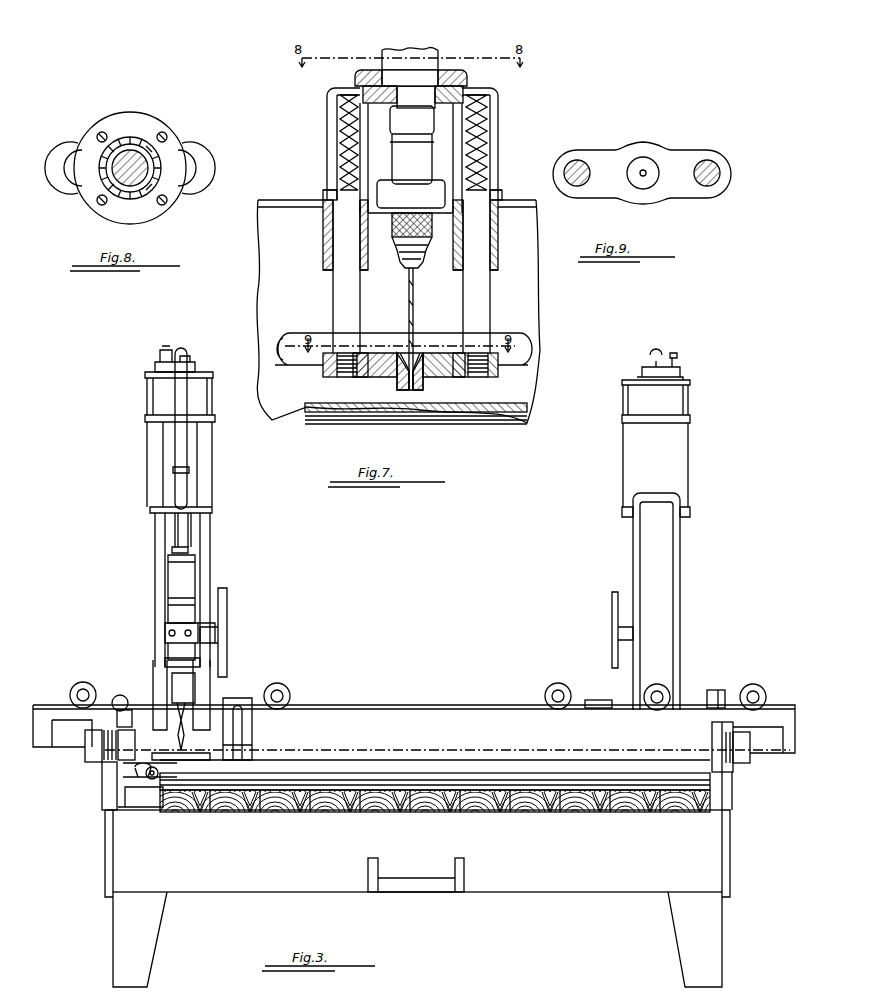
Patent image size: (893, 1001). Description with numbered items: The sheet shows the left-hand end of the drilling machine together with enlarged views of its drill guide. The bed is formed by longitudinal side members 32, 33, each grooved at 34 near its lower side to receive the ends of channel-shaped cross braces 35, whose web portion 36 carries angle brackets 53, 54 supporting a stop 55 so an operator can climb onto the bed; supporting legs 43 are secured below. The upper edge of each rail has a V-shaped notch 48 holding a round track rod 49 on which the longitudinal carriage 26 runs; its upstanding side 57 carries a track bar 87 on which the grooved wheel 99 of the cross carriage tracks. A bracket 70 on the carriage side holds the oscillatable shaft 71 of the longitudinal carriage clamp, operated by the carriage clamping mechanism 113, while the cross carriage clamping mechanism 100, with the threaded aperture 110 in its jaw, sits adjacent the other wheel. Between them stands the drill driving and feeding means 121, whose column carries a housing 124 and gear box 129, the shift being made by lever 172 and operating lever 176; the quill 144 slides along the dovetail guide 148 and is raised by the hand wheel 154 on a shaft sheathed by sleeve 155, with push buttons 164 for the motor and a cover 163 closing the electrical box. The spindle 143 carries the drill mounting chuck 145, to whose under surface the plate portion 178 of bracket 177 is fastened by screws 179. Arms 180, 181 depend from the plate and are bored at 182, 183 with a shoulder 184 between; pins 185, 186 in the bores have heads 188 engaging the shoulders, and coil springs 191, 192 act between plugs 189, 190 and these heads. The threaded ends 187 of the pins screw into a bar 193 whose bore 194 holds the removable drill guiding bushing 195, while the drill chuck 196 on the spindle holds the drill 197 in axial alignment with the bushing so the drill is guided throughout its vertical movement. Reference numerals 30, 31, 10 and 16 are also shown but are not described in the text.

In FIG. 7, the spindle 143 is at (412, 88).
In FIG. 8, the spindle 143 is at (152, 160).
In FIG. 3, the spindle 143 is at (178, 538).
In FIG. 7, the plate portion 178 is at (378, 80).
In FIG. 8, the plate portion 178 is at (166, 196).
In FIG. 7, the plug 190 is at (362, 80).
In FIG. 8, the plug 190 is at (70, 148).
In FIG. 7, the plug 189 is at (462, 90).
In FIG. 8, the plug 189 is at (204, 166).
In FIG. 7, the coil spring 192 is at (340, 128).
In FIG. 7, the coil spring 191 is at (494, 124).
In FIG. 7, the arm 181 is at (332, 165).
In FIG. 8, the arm 181 is at (45, 186).
In FIG. 3, the arm 181 is at (150, 670).
In FIG. 7, the arm 180 is at (495, 156).
In FIG. 8, the arm 180 is at (204, 175).
In FIG. 3, the arm 180 is at (222, 708).
In FIG. 7, the head 188 is at (325, 195).
In FIG. 7, the bore 183 is at (340, 190).
In FIG. 7, the shoulder 184 is at (330, 211).
In FIG. 7, the bore 182 is at (330, 247).
In FIG. 7, the pin 186 is at (345, 300).
In FIG. 7, the pin 185 is at (485, 286).
In FIG. 7, the bracket 177 is at (452, 112).
In FIG. 7, the drill chuck 196 is at (422, 256).
In FIG. 7, the drill 197 is at (409, 312).
In FIG. 9, the drill 197 is at (650, 170).
In FIG. 7, the threaded end 187 is at (350, 377).
In FIG. 9, the threaded end 187 is at (577, 183).
In FIG. 7, the bar 193 is at (380, 372).
In FIG. 9, the bar 193 is at (688, 158).
In FIG. 7, the bore 194 is at (422, 381).
In FIG. 7, the drill guiding bushing 195 is at (400, 380).
In FIG. 8, the screws 179 is at (153, 122).
In FIG. 9, the drill mounting chuck 145 is at (648, 176).
In FIG. 3, the lever 172 is at (172, 350).
In FIG. 3, the operating lever 176 is at (186, 388).
In FIG. 3, the gear box 129 is at (205, 401).
In FIG. 3, the housing 124 is at (150, 480).
In FIG. 3, the left column 30 is at (210, 482).
In FIG. 3, the right column 31 is at (688, 476).
In FIG. 3, the dovetail guide 148 is at (190, 531).
In FIG. 3, the drill driving and feeding means 121 is at (223, 566).
In FIG. 3, the quill 144 is at (176, 584).
In FIG. 3, the sleeve 155 is at (210, 612).
In FIG. 3, the push buttons 164 is at (172, 630).
In FIG. 3, the hand wheel 154 is at (228, 612).
In FIG. 3, the cover 163 is at (668, 538).
In FIG. 3, the clamping mechanism 100 is at (116, 690).
In FIG. 3, the machine 10 is at (115, 679).
In FIG. 3, the threaded aperture 110 is at (112, 724).
In FIG. 3, the bracket 70 is at (136, 724).
In FIG. 3, the grooved wheel 99 is at (78, 686).
In FIG. 3, the carriage clamping mechanism 113 is at (246, 698).
In FIG. 3, the rail 16 is at (237, 700).
In FIG. 3, the side 57 is at (352, 715).
In FIG. 3, the track bar 87 is at (442, 712).
In FIG. 3, the longitudinal carriage 26 is at (470, 712).
In FIG. 3, the shaft 71 is at (486, 754).
In FIG. 3, the V-shaped notch 48 is at (106, 766).
In FIG. 3, the track rod 49 is at (752, 758).
In FIG. 3, the side member 32 is at (104, 812).
In FIG. 3, the groove 34 is at (106, 854).
In FIG. 3, the side member 33 is at (730, 860).
In FIG. 3, the web portion 36 is at (417, 851).
In FIG. 3, the cross brace 35 is at (578, 882).
In FIG. 3, the angle bracket 53 is at (366, 870).
In FIG. 3, the angle bracket 54 is at (464, 866).
In FIG. 3, the stop 55 is at (408, 880).
In FIG. 3, the supporting legs 43 is at (155, 919).